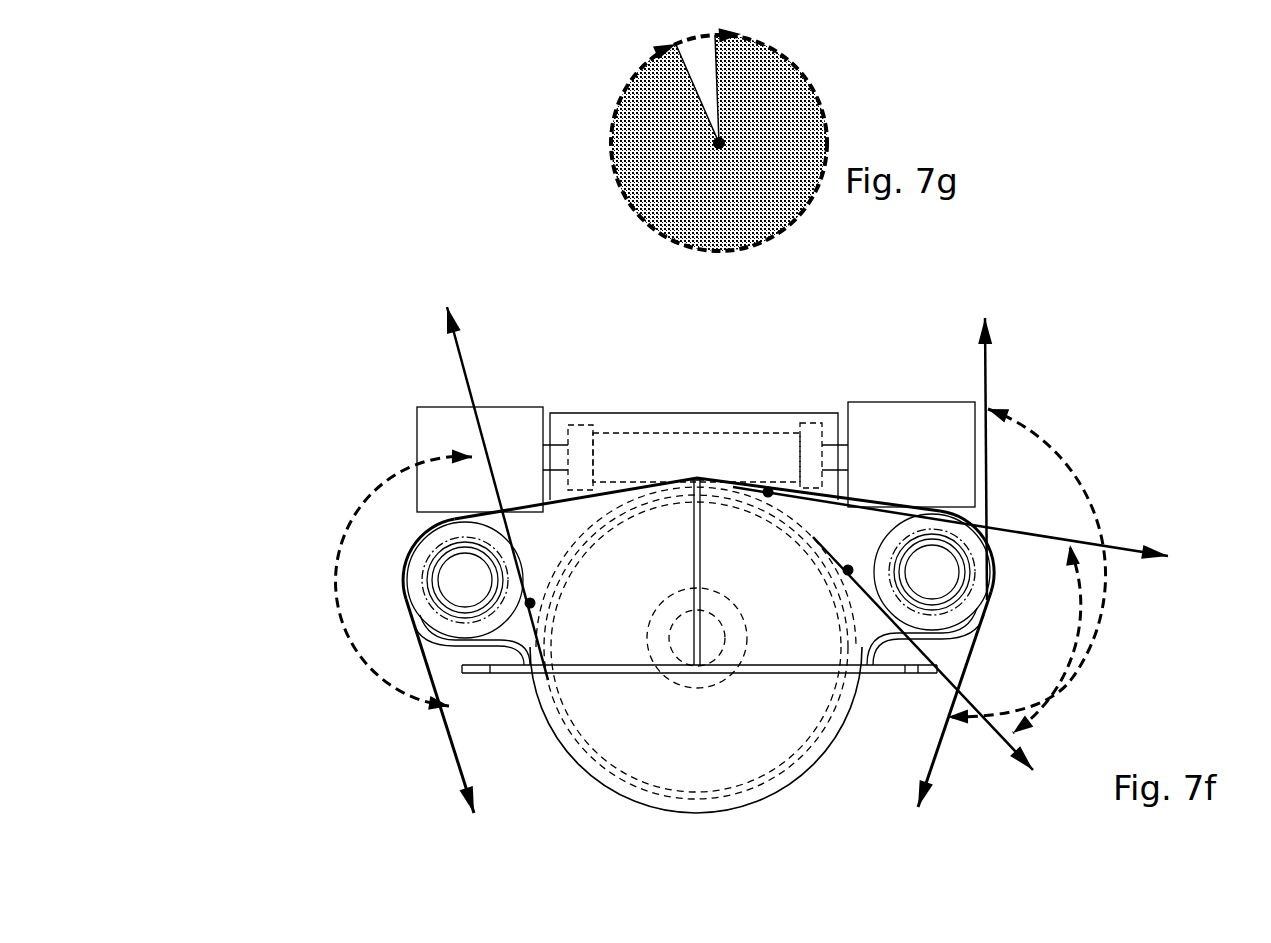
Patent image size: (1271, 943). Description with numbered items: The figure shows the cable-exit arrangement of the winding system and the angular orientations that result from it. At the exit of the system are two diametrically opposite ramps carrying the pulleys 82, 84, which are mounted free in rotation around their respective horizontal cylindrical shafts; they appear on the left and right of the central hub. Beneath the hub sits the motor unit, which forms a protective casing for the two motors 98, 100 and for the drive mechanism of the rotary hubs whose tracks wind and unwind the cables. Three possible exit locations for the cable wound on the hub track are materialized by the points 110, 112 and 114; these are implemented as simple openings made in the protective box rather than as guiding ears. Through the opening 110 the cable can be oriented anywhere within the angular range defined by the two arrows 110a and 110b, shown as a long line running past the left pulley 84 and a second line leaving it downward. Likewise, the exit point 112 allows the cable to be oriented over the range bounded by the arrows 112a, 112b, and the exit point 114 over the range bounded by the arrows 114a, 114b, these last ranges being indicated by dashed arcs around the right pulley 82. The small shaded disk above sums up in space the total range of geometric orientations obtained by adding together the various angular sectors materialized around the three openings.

The pulley 82 is at (1012, 582).
The pulley 84 is at (385, 581).
The motor 98 is at (905, 404).
The motor 100 is at (499, 408).
The exit point 110 is at (535, 600).
The arrow 110a is at (459, 355).
The arrow 110b is at (455, 761).
The exit point 112 is at (765, 485).
The arrow 112a is at (1135, 550).
The arrow 112b is at (937, 760).
The exit point 114 is at (845, 570).
The arrow 114a is at (993, 720).
The arrow 114b is at (988, 371).